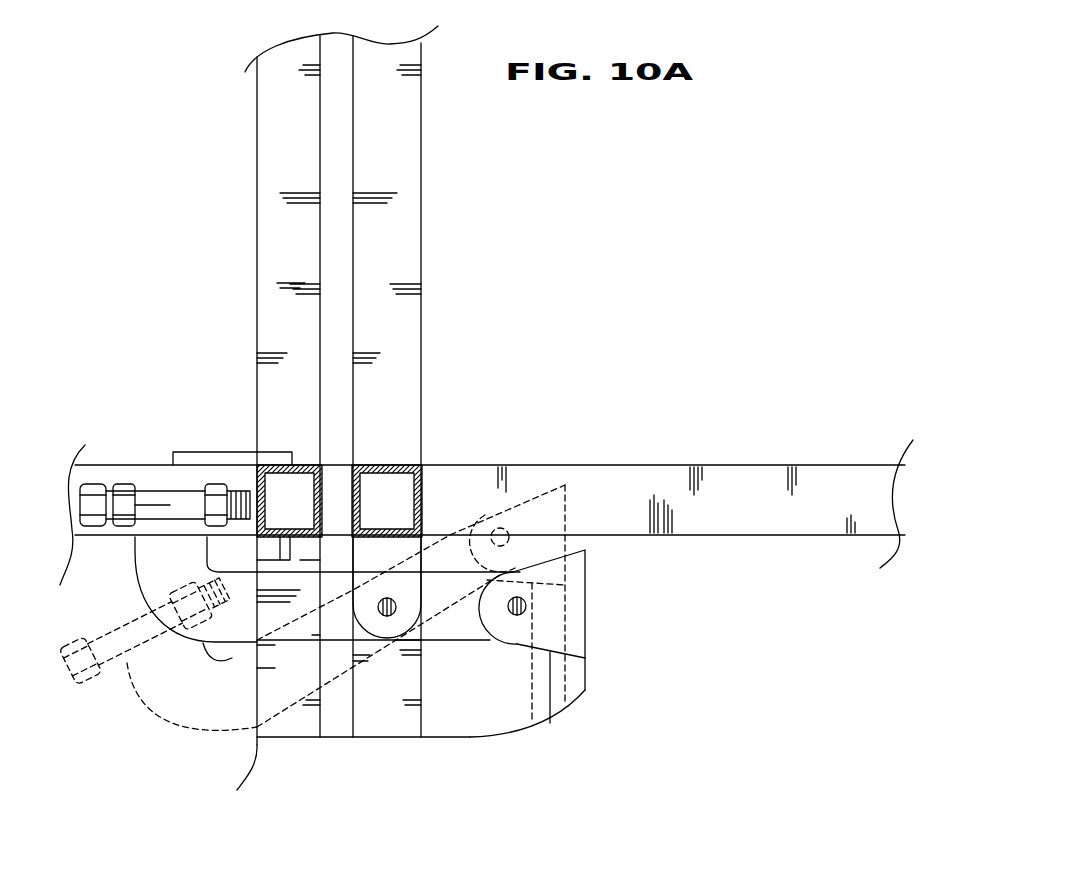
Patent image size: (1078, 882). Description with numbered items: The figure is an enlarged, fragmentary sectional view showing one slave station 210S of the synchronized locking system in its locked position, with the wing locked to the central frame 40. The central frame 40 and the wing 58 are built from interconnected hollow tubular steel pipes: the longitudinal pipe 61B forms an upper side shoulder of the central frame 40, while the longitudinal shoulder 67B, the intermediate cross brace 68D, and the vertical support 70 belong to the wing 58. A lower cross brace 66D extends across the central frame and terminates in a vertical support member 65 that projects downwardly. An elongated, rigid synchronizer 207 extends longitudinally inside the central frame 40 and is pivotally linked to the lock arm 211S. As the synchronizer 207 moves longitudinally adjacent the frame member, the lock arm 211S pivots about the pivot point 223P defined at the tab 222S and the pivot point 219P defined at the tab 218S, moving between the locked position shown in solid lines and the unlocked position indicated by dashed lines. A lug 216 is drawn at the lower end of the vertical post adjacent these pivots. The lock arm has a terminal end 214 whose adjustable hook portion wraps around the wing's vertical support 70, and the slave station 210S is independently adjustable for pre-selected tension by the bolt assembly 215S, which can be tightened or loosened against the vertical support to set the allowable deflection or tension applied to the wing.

The wing 58 is at (232, 242).
The longitudinal shoulder 67B is at (268, 148).
The longitudinal pipe 61B is at (405, 156).
The intermediate cross brace 68D is at (166, 465).
The vertical support member 65 is at (403, 452).
The vertical support 70 is at (298, 455).
The lower cross brace 66D is at (735, 470).
The slave station 210S is at (448, 451).
The bolt assembly 215S is at (95, 465).
The terminal end 214 is at (138, 566).
The lock arm 211S is at (232, 642).
The synchronizer 207 is at (548, 722).
The tab 222S is at (578, 588).
The pivot point 223P is at (530, 606).
The central frame 40 is at (760, 566).
The lug 216 is at (493, 642).
The tab 218S is at (398, 616).
The pivot point 219P is at (401, 634).